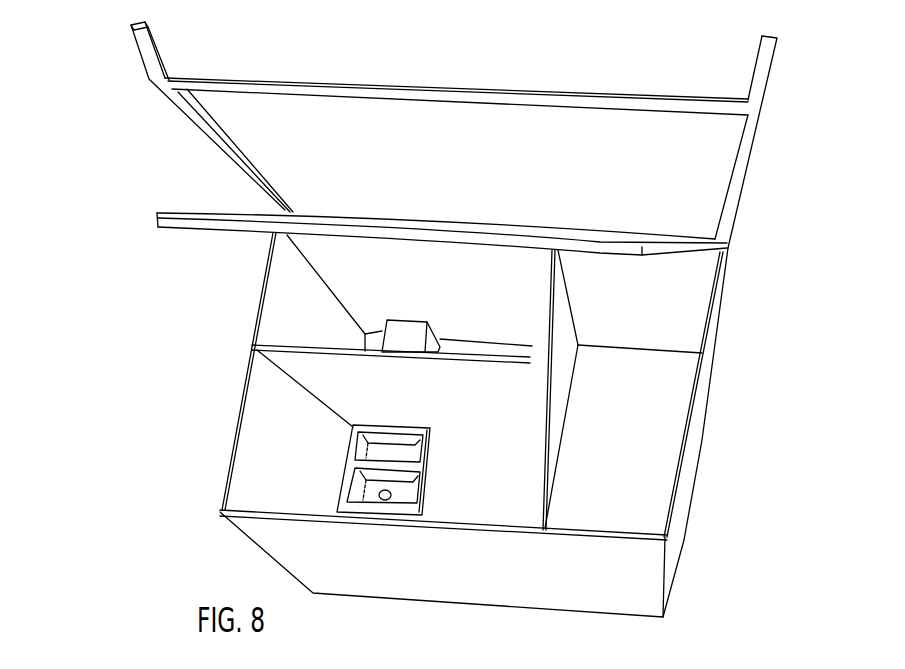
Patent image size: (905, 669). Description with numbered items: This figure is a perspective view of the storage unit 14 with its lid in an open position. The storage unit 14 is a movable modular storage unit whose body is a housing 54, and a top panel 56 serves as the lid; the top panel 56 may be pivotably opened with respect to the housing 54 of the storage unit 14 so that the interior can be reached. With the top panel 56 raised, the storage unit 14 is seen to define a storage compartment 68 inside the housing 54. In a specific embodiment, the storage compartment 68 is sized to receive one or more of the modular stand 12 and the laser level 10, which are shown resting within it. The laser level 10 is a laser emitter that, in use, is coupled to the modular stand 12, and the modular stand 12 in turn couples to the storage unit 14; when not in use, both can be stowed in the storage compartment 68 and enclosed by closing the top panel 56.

The laser level 10 is at (383, 328).
The modular stand 12 is at (338, 478).
The storage unit 14 is at (235, 383).
The housing 54 is at (243, 348).
The top panel 56 is at (150, 226).
The storage compartment 68 is at (627, 468).